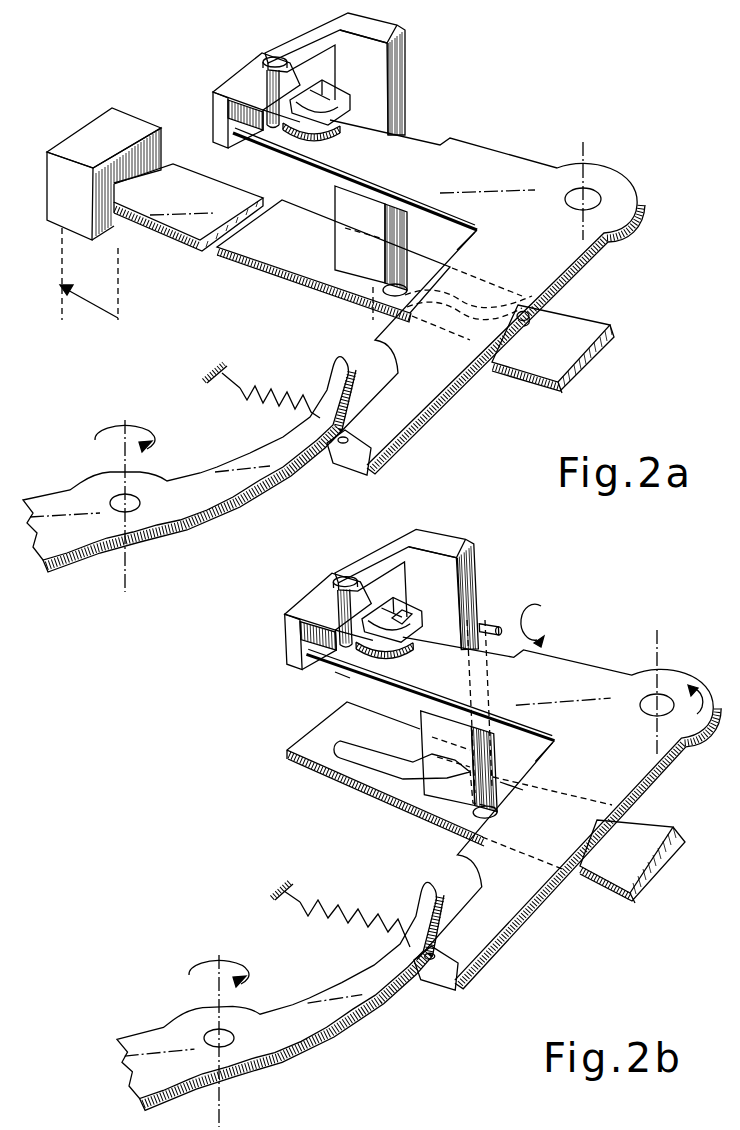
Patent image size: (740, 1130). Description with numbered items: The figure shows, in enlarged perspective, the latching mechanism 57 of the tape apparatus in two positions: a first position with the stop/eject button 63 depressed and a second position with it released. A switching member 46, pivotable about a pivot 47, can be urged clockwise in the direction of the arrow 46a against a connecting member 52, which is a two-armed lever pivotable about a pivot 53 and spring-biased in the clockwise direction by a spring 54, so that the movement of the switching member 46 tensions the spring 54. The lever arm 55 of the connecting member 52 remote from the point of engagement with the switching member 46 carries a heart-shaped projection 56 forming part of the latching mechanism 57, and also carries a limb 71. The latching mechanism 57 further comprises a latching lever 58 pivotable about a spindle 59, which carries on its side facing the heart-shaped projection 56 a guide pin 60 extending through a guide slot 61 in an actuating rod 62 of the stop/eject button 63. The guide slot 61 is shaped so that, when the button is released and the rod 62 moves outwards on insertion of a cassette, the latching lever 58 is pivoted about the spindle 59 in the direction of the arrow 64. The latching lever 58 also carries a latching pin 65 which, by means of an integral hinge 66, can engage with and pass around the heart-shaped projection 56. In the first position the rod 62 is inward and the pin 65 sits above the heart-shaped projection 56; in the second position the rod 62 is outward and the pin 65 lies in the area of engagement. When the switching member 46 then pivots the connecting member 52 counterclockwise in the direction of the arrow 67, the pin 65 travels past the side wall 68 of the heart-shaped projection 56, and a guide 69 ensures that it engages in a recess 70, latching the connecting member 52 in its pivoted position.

In FIG. 2a, the switching member 46 is at (227, 487).
In FIG. 2b, the switching member 46 is at (327, 1020).
In FIG. 2a, the arrow 46a is at (140, 425).
In FIG. 2b, the arrow 46a is at (247, 967).
In FIG. 2a, the pivot 47 is at (125, 580).
In FIG. 2b, the pivot 47 is at (223, 1110).
In FIG. 2a, the connecting member 52 is at (387, 427).
In FIG. 2b, the connecting member 52 is at (507, 920).
In FIG. 2a, the pivot 53 is at (587, 152).
In FIG. 2b, the pivot 53 is at (667, 630).
In FIG. 2a, the spring 54 is at (253, 420).
In FIG. 2b, the spring 54 is at (343, 948).
In FIG. 2a, the lever arm 55 is at (237, 80).
In FIG. 2b, the lever arm 55 is at (307, 608).
In FIG. 2a, the heart-shaped projection 56 is at (287, 133).
In FIG. 2b, the heart-shaped projection 56 is at (397, 667).
In FIG. 2a, the latching mechanism 57 is at (348, 152).
In FIG. 2b, the latching mechanism 57 is at (420, 667).
In FIG. 2a, the latching lever 58 is at (403, 53).
In FIG. 2b, the latching lever 58 is at (470, 560).
In FIG. 2b, the spindle 59 is at (493, 610).
In FIG. 2a, the guide pin 60 is at (400, 287).
In FIG. 2b, the guide pin 60 is at (505, 805).
In FIG. 2a, the guide slot 61 is at (543, 325).
In FIG. 2b, the guide slot 61 is at (375, 767).
In FIG. 2a, the actuating rod 62 is at (297, 263).
In FIG. 2b, the actuating rod 62 is at (652, 832).
In FIG. 2a, the stop/eject button 63 is at (120, 127).
In FIG. 2b, the arrow 64 is at (540, 605).
In FIG. 2a, the latching pin 65 is at (265, 77).
In FIG. 2b, the latching pin 65 is at (330, 597).
In FIG. 2a, the integral hinge 66 is at (323, 28).
In FIG. 2b, the integral hinge 66 is at (403, 546).
In FIG. 2b, the arrow 67 is at (708, 693).
In FIG. 2b, the side wall 68 is at (340, 677).
In FIG. 2a, the guide 69 is at (333, 110).
In FIG. 2b, the guide 69 is at (405, 622).
In FIG. 2b, the recess 70 is at (398, 618).
In FIG. 2a, the limb 71 is at (213, 115).
In FIG. 2b, the limb 71 is at (288, 646).